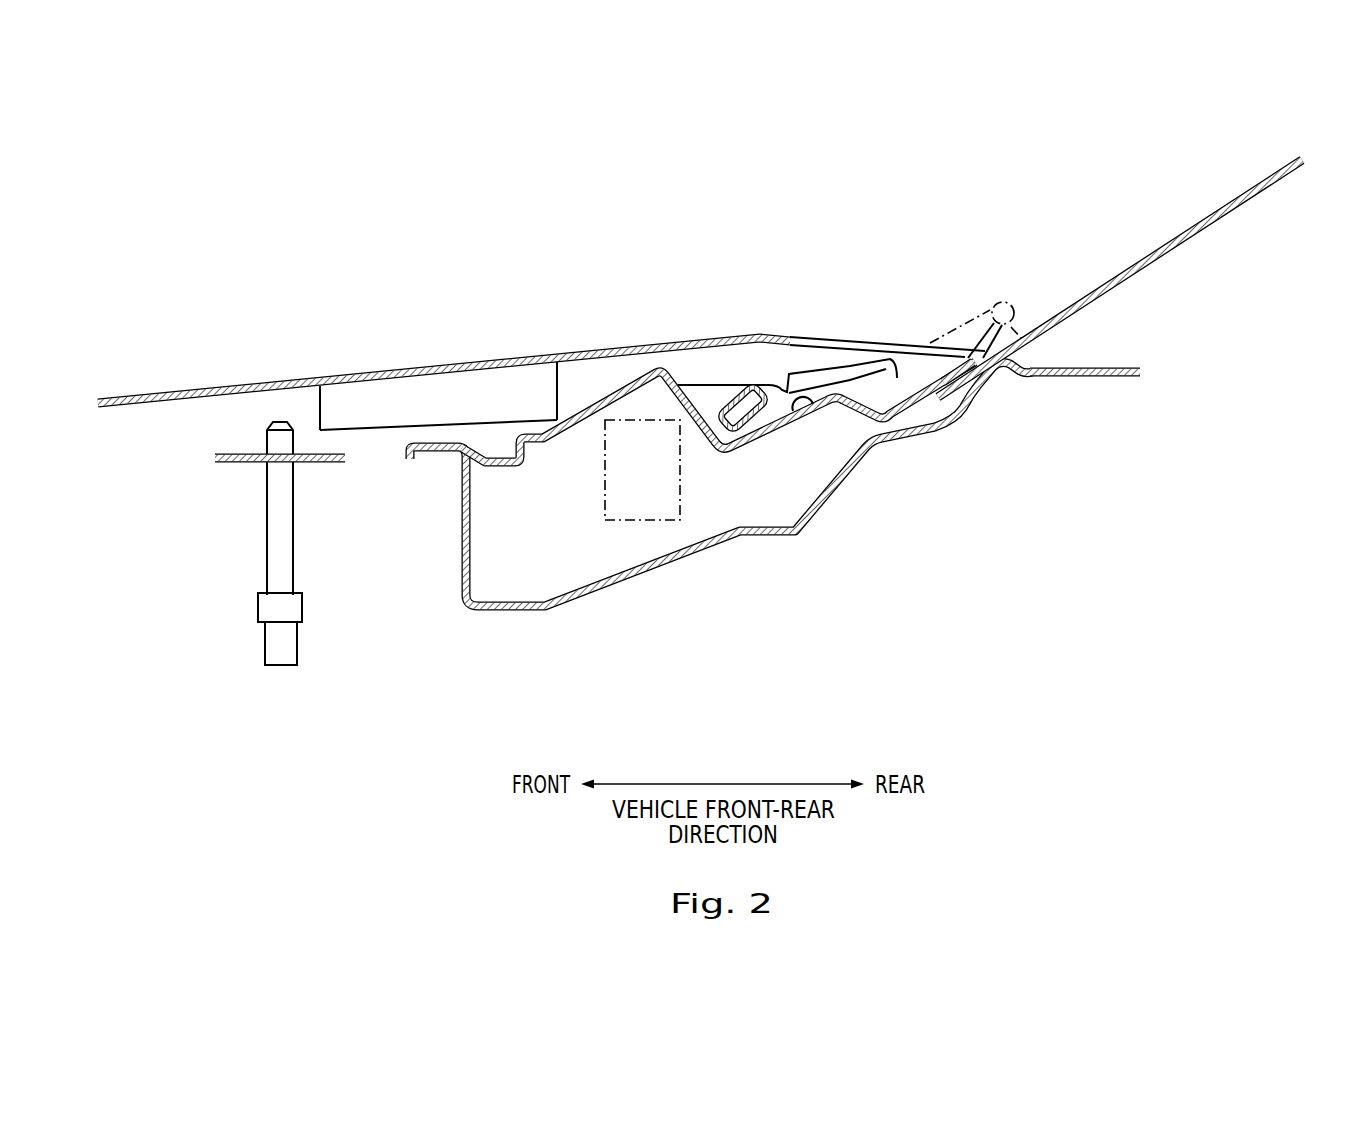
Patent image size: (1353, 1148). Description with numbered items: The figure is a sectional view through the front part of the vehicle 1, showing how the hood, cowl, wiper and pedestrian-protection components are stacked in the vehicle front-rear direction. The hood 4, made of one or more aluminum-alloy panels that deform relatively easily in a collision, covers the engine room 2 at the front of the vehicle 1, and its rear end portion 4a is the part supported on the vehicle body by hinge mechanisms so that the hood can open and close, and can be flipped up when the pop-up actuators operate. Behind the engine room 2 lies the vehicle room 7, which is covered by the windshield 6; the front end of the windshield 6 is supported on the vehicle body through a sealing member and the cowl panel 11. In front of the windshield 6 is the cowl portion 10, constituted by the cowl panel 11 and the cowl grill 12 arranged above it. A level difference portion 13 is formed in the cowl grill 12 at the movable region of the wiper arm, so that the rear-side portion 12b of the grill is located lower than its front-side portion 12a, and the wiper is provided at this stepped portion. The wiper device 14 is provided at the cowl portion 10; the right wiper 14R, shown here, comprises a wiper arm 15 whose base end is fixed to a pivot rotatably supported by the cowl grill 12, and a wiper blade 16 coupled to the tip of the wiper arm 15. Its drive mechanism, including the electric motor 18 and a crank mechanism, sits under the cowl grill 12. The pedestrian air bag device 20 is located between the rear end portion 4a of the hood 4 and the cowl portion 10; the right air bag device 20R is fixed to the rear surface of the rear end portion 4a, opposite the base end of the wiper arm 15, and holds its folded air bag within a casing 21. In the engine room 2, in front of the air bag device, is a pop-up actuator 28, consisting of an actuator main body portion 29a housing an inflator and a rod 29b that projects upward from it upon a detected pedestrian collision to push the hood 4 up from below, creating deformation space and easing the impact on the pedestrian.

The vehicle 1 is at (497, 188).
The engine room 2 is at (124, 515).
The hood 4 is at (541, 334).
The rear end portion 4a is at (571, 350).
The windshield 6 is at (1190, 231).
The vehicle room 7 is at (1153, 469).
The cowl portion 10 is at (578, 552).
The cowl panel 11 is at (918, 441).
The cowl grill 12 is at (545, 466).
The inner panel upper flange 12a is at (686, 384).
The inner panel rear portion 12b is at (801, 420).
The level difference portion 13 is at (731, 368).
The wiper device 14 is at (871, 309).
The right wiper 14R is at (940, 240).
The wiper arm 15 is at (748, 388).
The wiper blade 16 is at (994, 303).
The electric motor 18 is at (628, 522).
The pedestrian air bag device 20 is at (438, 390).
The right air bag device 20R is at (438, 390).
The casing 21 is at (376, 432).
The pop-up actuator 28 is at (253, 538).
The actuator main body portion 29a is at (282, 567).
The rod 29b is at (262, 438).